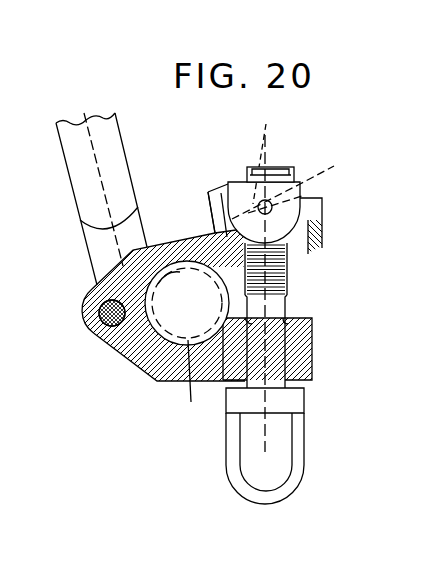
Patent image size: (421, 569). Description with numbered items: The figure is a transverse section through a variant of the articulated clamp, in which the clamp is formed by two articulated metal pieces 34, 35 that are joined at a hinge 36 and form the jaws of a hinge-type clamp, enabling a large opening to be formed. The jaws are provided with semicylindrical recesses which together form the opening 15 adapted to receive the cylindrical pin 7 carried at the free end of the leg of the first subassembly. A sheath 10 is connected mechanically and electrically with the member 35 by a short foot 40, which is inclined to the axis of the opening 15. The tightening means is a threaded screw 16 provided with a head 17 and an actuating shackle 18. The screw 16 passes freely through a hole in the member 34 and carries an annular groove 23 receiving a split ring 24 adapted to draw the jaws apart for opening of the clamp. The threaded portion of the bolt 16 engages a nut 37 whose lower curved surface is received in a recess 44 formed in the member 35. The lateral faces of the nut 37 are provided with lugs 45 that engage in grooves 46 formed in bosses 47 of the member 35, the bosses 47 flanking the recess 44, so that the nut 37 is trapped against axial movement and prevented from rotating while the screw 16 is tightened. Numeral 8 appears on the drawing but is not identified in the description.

The pin 7 is at (189, 386).
The clamp assembly 8 is at (157, 388).
The sheath 10 is at (80, 181).
The opening 15 is at (173, 282).
The threaded screw 16 is at (273, 168).
The head 17 is at (292, 402).
The actuating shackle 18 is at (298, 475).
The annular groove 23 is at (277, 318).
The split ring 24 is at (244, 318).
The clamp member 34 is at (310, 355).
The clamp member 35 is at (287, 264).
The hinge 36 is at (98, 340).
The nut 37 is at (237, 186).
The foot 40 is at (102, 258).
The recess 44 is at (212, 222).
The lugs 45 is at (295, 200).
The grooves 46 is at (274, 157).
The boss 47 is at (221, 193).